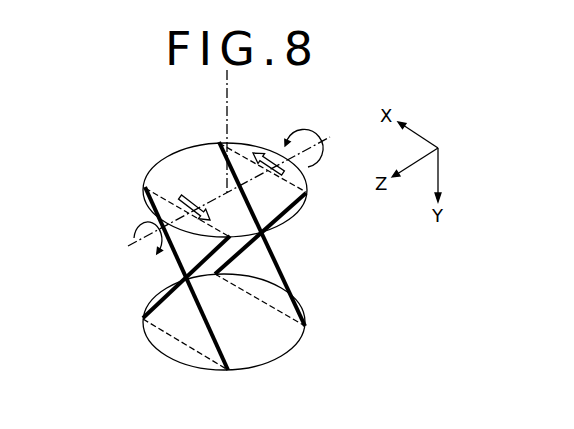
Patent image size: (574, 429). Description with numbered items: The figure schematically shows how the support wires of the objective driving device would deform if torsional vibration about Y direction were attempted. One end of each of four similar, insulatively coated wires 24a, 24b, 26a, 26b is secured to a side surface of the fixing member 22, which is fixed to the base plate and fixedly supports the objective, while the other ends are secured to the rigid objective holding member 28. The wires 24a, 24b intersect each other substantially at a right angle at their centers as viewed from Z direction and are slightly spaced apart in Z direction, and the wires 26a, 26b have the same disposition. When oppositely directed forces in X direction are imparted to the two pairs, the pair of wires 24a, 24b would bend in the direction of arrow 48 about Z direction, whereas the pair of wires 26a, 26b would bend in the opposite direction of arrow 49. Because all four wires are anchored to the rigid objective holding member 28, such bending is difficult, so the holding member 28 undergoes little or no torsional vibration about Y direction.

The fixing member 22 is at (286, 354).
The objective holding member 28 is at (190, 146).
The wire 24a is at (208, 322).
The wire 24b is at (158, 299).
The wire 26a is at (279, 273).
The wire 26b is at (240, 252).
The arrow 48 is at (144, 214).
The arrow 49 is at (303, 128).